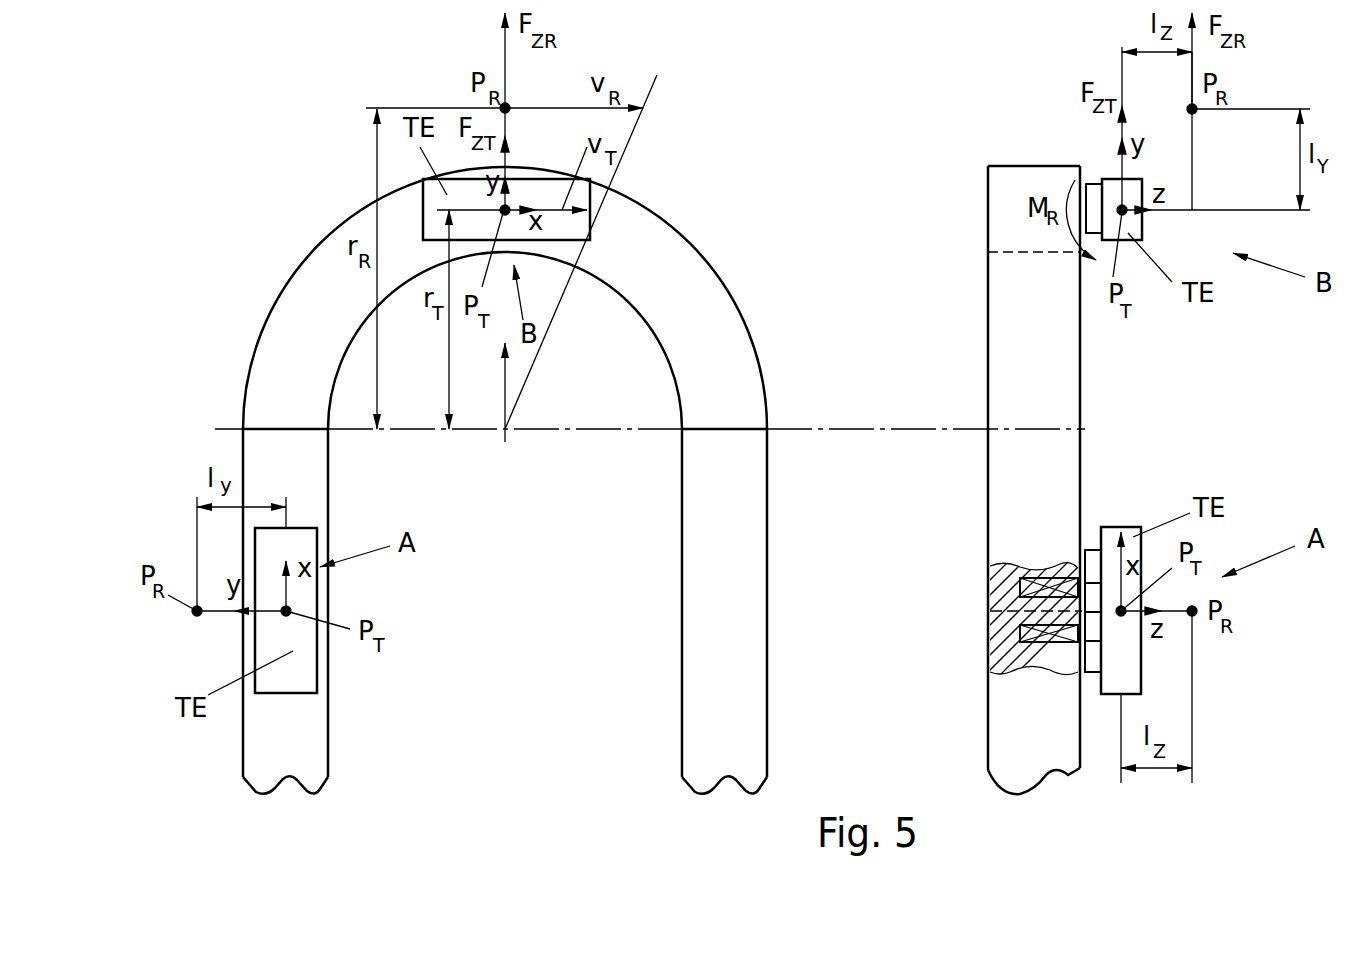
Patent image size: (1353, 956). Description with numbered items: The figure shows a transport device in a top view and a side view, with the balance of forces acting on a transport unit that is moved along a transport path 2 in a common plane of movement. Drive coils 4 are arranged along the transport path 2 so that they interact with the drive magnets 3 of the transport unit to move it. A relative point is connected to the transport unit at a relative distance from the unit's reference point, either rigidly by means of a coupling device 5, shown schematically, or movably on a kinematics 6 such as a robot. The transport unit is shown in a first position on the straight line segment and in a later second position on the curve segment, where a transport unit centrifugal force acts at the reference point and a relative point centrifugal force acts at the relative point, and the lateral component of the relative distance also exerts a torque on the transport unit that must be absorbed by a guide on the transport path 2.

The transport path 2 is at (230, 192).
The drive magnets 3 is at (1093, 195).
The drive coils 4 is at (1032, 597).
The coupling device 5 is at (1251, 159).
The kinematics 6 is at (1193, 178).